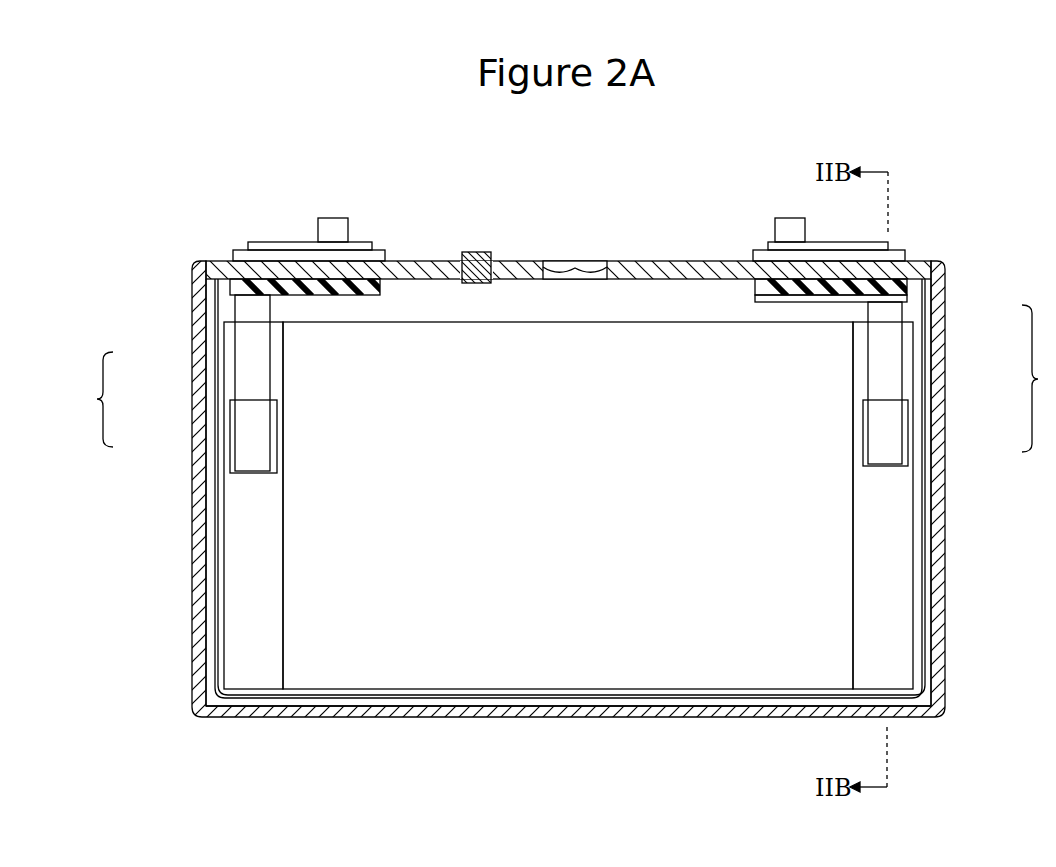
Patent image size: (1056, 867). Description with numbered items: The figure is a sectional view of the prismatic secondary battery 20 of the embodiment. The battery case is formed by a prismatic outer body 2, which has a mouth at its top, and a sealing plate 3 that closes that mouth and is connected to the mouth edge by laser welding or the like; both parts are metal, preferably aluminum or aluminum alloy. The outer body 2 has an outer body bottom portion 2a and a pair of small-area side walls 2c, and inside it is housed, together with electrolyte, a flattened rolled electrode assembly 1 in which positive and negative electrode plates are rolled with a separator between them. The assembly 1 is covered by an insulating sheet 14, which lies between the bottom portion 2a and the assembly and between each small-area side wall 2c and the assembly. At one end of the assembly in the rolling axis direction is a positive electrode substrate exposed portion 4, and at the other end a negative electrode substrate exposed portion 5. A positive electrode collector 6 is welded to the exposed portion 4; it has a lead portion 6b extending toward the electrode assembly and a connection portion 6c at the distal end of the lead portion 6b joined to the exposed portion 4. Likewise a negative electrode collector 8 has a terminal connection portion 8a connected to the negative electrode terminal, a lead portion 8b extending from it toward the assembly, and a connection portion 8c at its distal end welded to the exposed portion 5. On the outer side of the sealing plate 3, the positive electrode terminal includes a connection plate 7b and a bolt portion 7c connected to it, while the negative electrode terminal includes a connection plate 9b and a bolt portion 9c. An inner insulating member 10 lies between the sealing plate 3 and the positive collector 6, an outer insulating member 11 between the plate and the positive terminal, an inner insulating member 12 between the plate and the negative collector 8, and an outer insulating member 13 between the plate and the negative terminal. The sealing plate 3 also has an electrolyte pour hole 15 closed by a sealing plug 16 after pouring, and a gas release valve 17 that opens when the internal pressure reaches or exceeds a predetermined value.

The prismatic secondary battery 20 is at (456, 131).
The flattened rolled electrode assembly 1 is at (518, 684).
The prismatic outer body 2 is at (790, 713).
The outer body bottom portion 2a is at (372, 714).
The small-area side wall 2c is at (200, 523).
The sealing plate 3 is at (656, 270).
The positive electrode substrate exposed portion 4 is at (245, 680).
The negative electrode substrate exposed portion 5 is at (897, 677).
The positive electrode collector 6 is at (176, 383).
The lead portion 6b is at (250, 355).
The connection portion 6c is at (245, 428).
The connection plate 7b is at (258, 248).
The bolt portion 7c is at (336, 230).
The negative electrode collector 8 is at (962, 383).
The terminal connection portion 8a is at (890, 298).
The lead portion 8b is at (890, 352).
The connection portion 8c is at (893, 432).
The connection plate 9b is at (850, 249).
The bolt portion 9c is at (790, 230).
The inner insulating member 10 is at (242, 289).
The outer insulating member 11 is at (243, 256).
The inner insulating member 12 is at (900, 290).
The outer insulating member 13 is at (757, 257).
The insulating sheet 14 is at (216, 603).
The electrolyte pour hole 15 is at (464, 262).
The sealing plug 16 is at (478, 260).
The gas release valve 17 is at (574, 268).